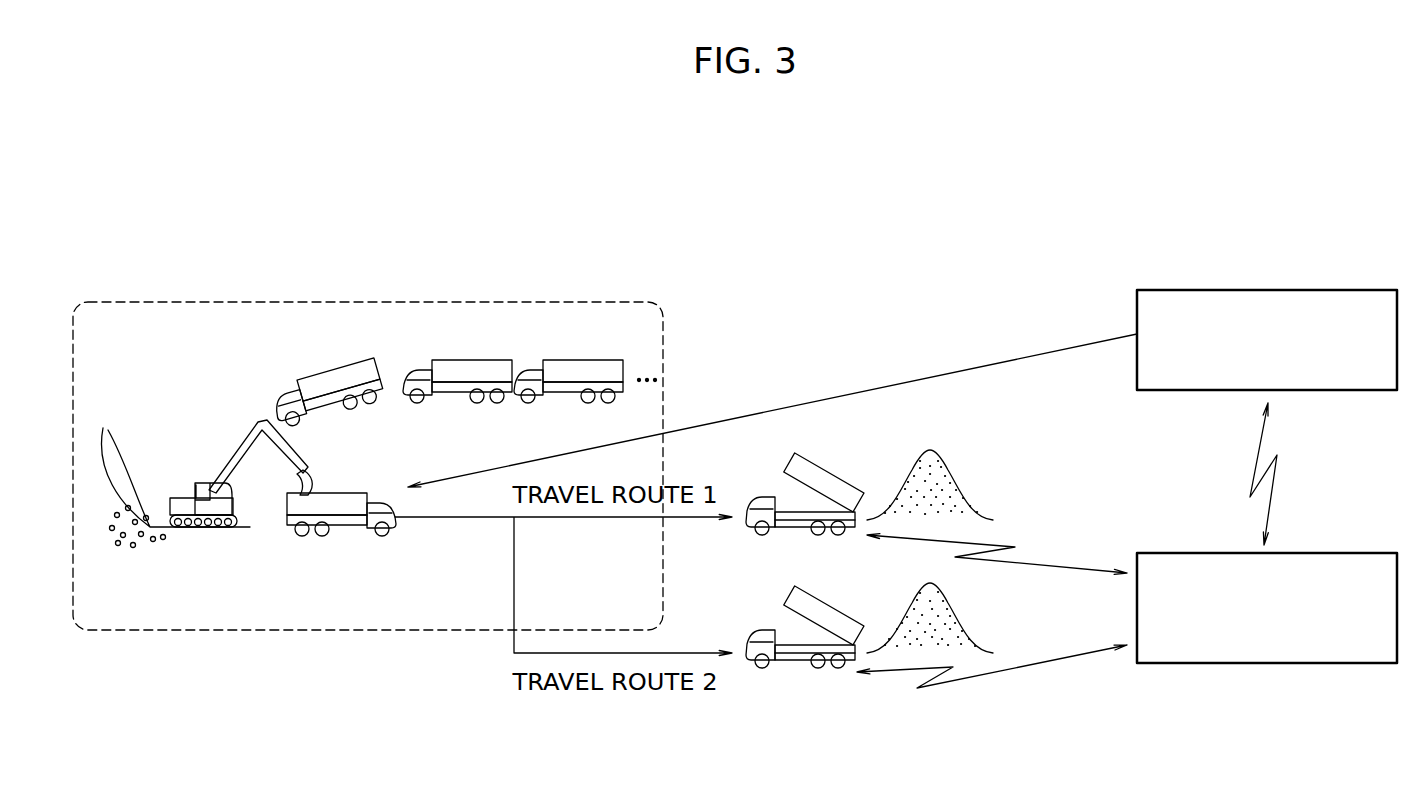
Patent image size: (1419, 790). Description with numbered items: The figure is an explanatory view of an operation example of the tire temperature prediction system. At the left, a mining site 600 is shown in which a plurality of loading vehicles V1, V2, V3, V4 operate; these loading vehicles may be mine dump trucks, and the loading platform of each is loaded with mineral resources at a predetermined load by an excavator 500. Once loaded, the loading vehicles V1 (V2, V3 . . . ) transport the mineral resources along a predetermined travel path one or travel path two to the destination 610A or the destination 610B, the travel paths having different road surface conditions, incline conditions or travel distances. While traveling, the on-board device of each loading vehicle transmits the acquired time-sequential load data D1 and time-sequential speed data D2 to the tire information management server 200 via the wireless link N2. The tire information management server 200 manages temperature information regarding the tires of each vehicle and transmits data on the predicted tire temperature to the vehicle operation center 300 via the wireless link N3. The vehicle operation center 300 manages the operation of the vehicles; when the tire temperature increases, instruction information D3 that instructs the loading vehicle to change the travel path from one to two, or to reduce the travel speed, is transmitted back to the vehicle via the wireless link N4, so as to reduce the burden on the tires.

The mining site 600 is at (465, 300).
The excavator 500 is at (229, 460).
The vehicle operation center 300 is at (1362, 290).
The tire information management server 200 is at (1362, 553).
The destination 610A is at (988, 483).
The destination 610B is at (988, 616).
The loading vehicle V1 is at (340, 532).
The loading vehicle V2 is at (323, 368).
The loading vehicle V3 is at (458, 360).
The loading vehicle V4 is at (578, 360).
The wireless link N2 is at (992, 616).
The wireless link N3 is at (1282, 474).
The wireless link N4 is at (772, 410).
The instruction information D3 is at (1073, 346).
The time-sequential load data D1 is at (1093, 569).
The time-sequential speed data D2 is at (1072, 657).